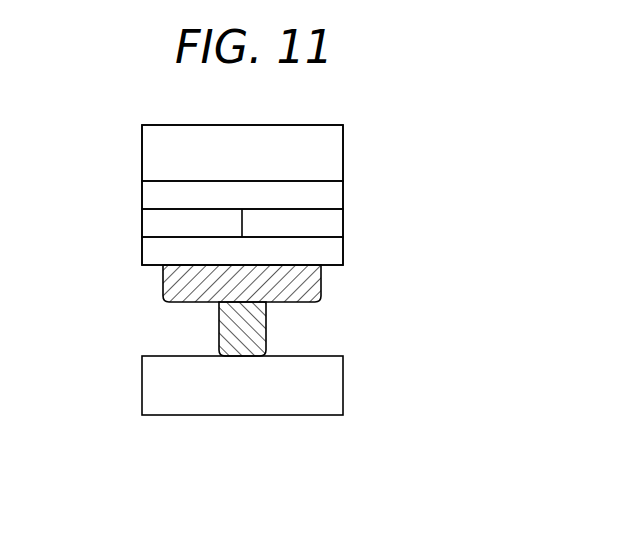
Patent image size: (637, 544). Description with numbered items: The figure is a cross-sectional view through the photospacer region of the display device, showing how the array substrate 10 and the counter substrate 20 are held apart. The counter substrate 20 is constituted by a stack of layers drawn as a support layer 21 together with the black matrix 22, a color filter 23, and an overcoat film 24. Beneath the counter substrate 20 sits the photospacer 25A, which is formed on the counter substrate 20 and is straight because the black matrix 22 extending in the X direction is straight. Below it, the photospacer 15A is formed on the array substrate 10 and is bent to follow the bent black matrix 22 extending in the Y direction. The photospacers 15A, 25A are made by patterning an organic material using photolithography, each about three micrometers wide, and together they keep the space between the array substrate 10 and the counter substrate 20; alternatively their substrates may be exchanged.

The array substrate 10 is at (154, 389).
The photospacer 15A is at (225, 326).
The counter substrate 20 is at (433, 125).
The support substrate 21 is at (343, 140).
The black matrix 22 is at (343, 197).
The color filter 23 is at (343, 223).
The overcoat film 24 is at (343, 252).
The photospacer 25A is at (321, 285).